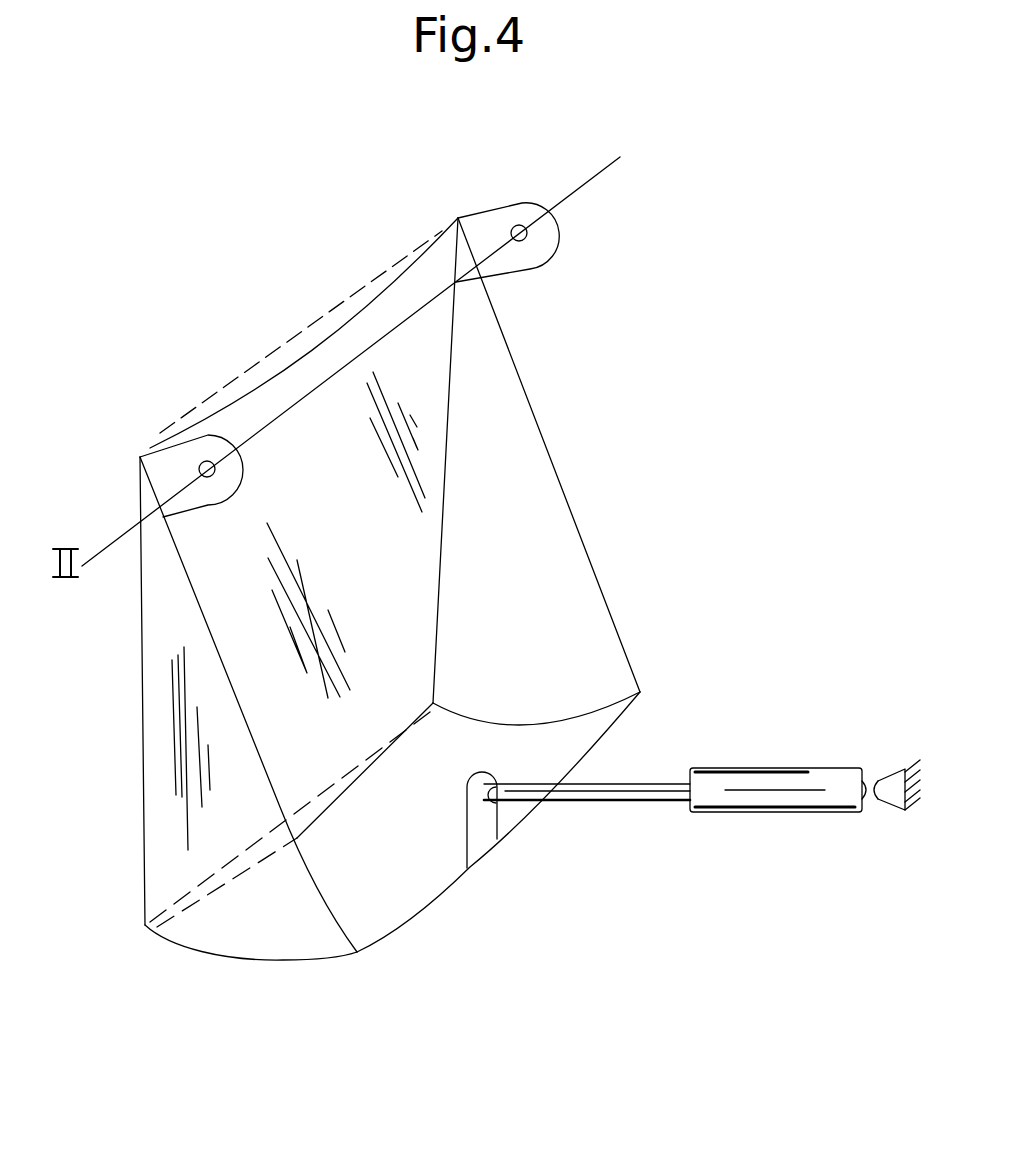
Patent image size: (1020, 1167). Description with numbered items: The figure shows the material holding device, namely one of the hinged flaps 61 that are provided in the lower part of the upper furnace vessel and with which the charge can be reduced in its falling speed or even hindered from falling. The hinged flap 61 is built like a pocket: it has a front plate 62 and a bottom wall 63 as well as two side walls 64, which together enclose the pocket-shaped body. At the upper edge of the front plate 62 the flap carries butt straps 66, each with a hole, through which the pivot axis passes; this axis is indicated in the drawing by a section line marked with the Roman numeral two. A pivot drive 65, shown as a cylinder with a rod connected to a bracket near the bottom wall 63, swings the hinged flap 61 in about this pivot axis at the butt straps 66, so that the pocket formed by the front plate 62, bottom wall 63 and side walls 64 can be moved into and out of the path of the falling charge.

The hinged flaps 61 is at (266, 223).
The front plate 62 is at (275, 418).
The bottom wall 63 is at (395, 892).
The side walls 64 is at (158, 747).
The pivot drive 65 is at (767, 812).
The butt straps 66 is at (548, 227).